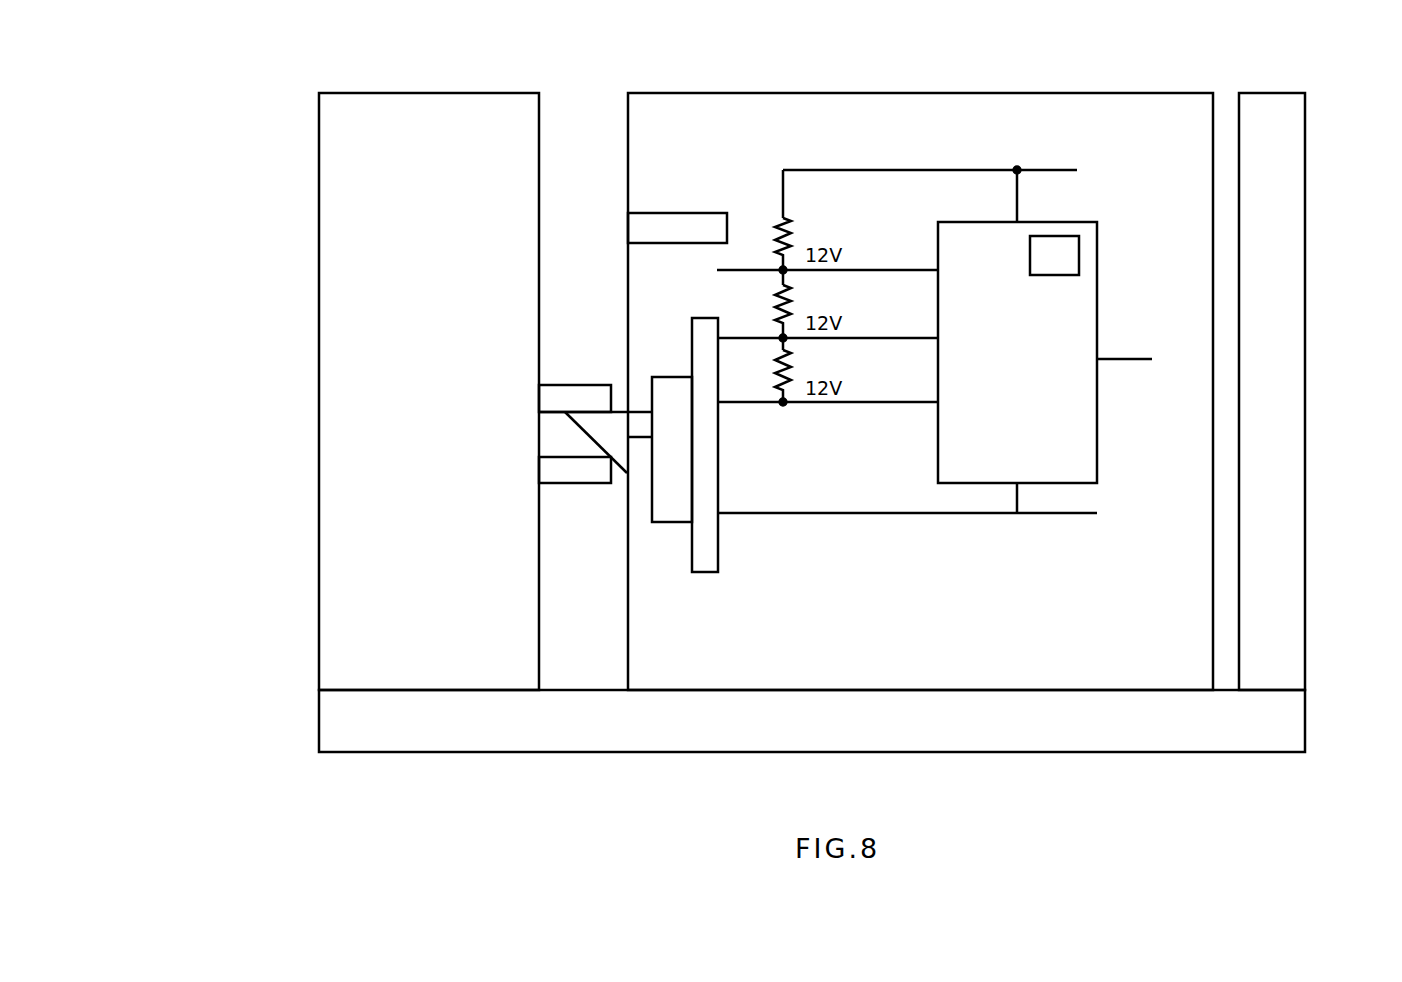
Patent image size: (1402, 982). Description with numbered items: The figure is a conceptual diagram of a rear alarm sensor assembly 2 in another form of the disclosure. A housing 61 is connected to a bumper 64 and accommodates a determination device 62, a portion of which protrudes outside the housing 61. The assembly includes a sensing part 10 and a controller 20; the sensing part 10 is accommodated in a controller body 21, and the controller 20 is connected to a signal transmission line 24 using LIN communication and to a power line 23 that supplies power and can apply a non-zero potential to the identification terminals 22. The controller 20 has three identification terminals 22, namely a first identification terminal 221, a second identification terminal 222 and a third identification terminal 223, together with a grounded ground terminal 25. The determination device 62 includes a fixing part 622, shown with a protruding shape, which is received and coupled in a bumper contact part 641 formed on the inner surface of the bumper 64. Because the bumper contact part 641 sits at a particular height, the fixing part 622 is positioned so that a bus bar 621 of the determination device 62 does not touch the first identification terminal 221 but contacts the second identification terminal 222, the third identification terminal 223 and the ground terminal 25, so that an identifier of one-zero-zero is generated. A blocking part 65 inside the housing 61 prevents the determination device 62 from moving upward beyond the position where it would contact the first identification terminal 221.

The rear alarm sensor assembly 2 is at (955, 76).
The housing 61 is at (1146, 93).
The bumper 64 is at (305, 618).
The blocking part 65 is at (676, 223).
The bumper contact part 641 is at (577, 397).
The determination device 62 is at (733, 462).
The bus bar 621 is at (705, 547).
The fixing part 622 is at (613, 410).
The identification terminals 22 is at (885, 358).
The first identification terminal 221 is at (895, 268).
The second identification terminal 222 is at (895, 336).
The third identification terminal 223 is at (895, 400).
The power line 23 is at (943, 170).
The controller body 21 is at (1098, 221).
The sensing part 10 is at (1079, 263).
The controller 20 is at (1110, 454).
The signal transmission line 24 is at (1128, 362).
The ground terminal 25 is at (905, 515).